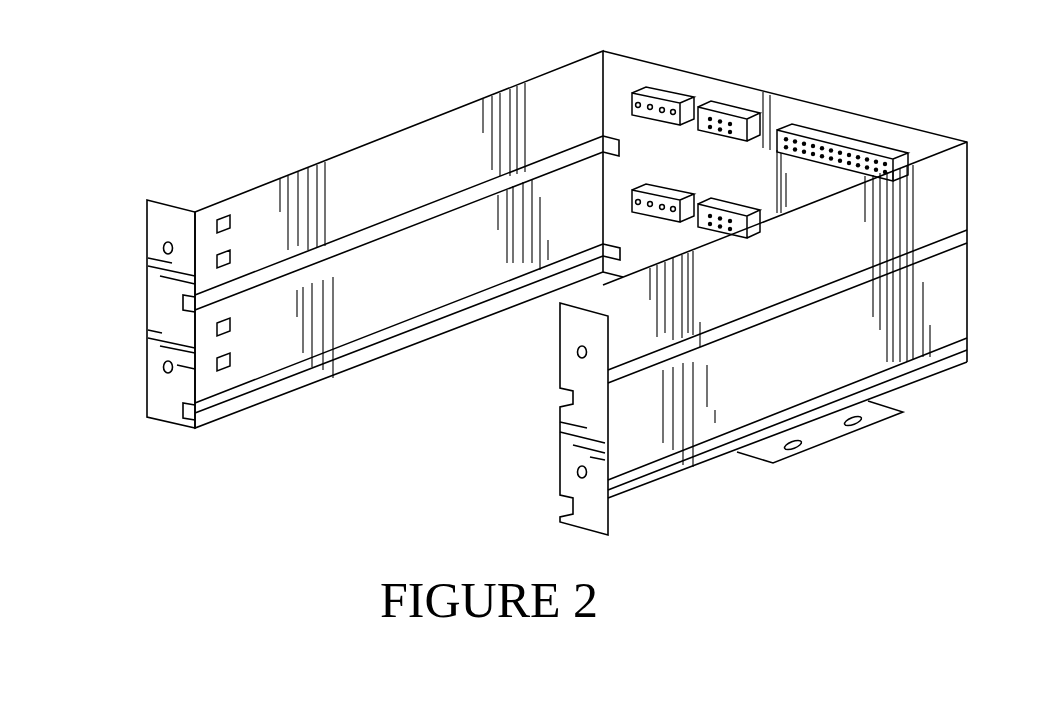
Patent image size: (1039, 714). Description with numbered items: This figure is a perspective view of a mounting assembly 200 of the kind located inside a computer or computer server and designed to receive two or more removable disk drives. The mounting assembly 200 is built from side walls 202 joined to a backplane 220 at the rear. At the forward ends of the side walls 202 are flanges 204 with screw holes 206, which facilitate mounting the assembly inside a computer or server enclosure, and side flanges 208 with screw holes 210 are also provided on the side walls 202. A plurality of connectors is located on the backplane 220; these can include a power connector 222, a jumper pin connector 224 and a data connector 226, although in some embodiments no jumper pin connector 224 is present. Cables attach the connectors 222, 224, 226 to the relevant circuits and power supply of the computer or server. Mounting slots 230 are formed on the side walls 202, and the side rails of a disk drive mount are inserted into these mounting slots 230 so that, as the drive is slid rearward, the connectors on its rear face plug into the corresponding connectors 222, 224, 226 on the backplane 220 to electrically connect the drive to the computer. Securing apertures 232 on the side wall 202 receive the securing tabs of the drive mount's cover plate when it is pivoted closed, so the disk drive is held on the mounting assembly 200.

The mounting assembly 200 is at (380, 99).
The side walls 202 is at (268, 197).
The flanges 204 is at (155, 220).
The screw holes 206 is at (163, 249).
The side flanges 208 is at (818, 437).
The screw holes 210 is at (797, 452).
The backplane 220 is at (725, 93).
The power connector 222 is at (655, 93).
The jumper pin connector 224 is at (740, 115).
The data connector 226 is at (860, 143).
The mounting slots 230 is at (185, 303).
The securing apertures 232 is at (221, 258).